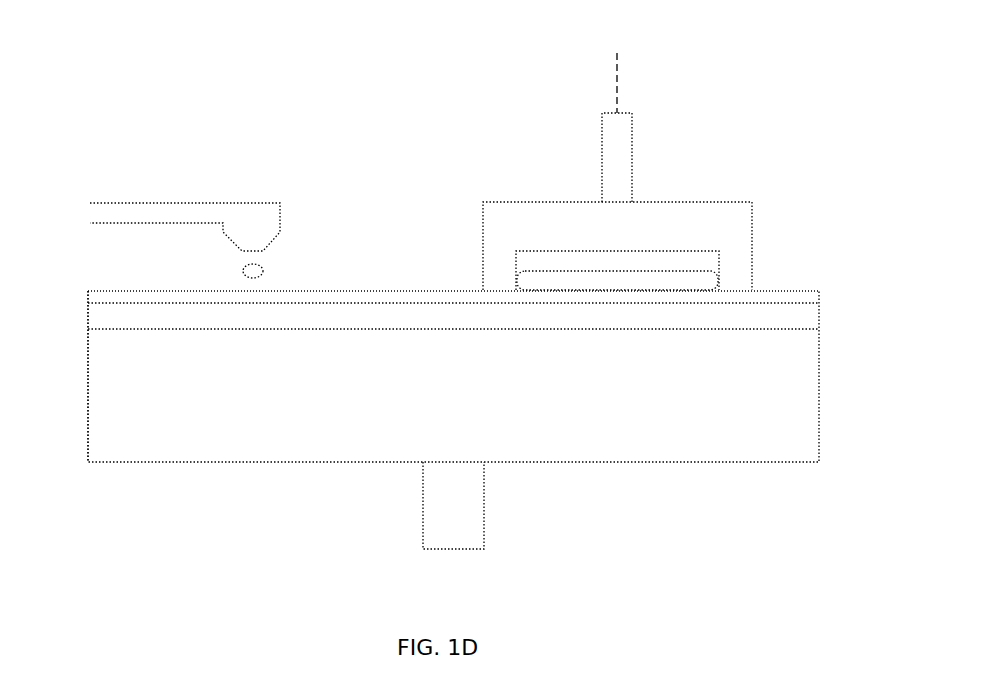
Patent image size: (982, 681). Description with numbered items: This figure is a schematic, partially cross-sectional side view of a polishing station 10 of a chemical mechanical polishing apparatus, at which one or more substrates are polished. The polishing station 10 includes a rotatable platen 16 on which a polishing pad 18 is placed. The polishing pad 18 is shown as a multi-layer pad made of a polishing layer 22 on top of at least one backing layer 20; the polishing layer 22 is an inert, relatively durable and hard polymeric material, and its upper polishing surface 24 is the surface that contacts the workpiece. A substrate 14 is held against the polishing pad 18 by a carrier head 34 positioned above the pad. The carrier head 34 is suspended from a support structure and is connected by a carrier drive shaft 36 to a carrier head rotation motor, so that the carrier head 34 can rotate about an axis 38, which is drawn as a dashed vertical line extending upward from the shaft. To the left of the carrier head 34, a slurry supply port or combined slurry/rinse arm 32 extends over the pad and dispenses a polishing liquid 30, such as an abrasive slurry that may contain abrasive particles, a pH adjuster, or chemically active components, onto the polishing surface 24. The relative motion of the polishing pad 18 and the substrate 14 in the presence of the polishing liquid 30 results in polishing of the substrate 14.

The polishing station 10 is at (238, 83).
The substrate 14 is at (640, 272).
The rotatable platen 16 is at (819, 397).
The polishing pad 18 is at (88, 303).
The backing layer 20 is at (820, 322).
The polishing layer 22 is at (819, 293).
The polishing surface 24 is at (373, 291).
The polishing liquid 30 is at (265, 270).
The slurry/rinse arm 32 is at (224, 202).
The carrier head 34 is at (715, 202).
The carrier drive shaft 36 is at (602, 177).
The axis 38 is at (617, 83).